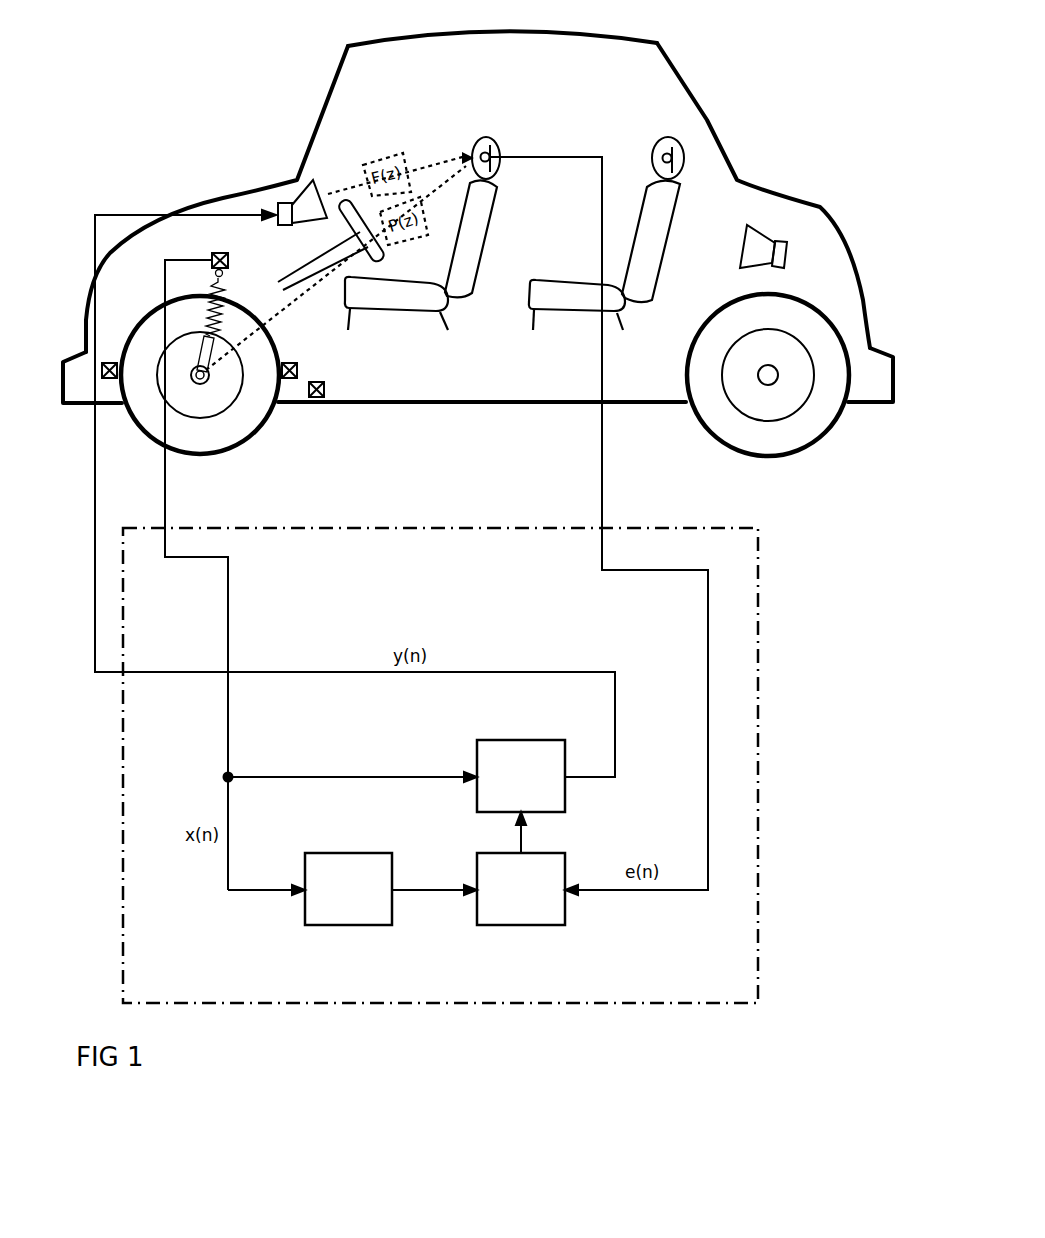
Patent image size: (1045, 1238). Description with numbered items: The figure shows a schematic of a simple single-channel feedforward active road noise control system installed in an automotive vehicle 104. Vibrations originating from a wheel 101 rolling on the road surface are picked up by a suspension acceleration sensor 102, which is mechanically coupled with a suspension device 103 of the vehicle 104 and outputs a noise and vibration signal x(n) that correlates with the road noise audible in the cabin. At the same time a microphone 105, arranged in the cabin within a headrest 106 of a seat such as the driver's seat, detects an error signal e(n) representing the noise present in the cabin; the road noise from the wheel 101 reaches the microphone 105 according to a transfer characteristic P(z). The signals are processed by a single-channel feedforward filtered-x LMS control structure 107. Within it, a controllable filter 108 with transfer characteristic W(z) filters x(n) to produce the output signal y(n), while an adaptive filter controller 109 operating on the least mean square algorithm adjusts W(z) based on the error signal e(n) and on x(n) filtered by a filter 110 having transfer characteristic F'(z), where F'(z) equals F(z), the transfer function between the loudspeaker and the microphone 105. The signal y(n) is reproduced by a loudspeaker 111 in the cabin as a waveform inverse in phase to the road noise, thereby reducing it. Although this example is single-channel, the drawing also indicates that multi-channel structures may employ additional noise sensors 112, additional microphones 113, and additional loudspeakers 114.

The wheel 101 is at (233, 430).
The suspension acceleration sensor 102 is at (218, 253).
The suspension device 103 is at (215, 283).
The automotive vehicle 104 is at (656, 384).
The microphone 105 is at (500, 150).
The headrest 106 is at (481, 138).
The single-channel feedforward filtered-x LMS control structure 107 is at (758, 700).
The controllable filter 108 is at (565, 802).
The adaptive filter controller 109 is at (565, 915).
The filter 110 is at (305, 915).
The loudspeaker 111 is at (317, 181).
The additional noise sensors 112 is at (110, 380).
The additional microphones 113 is at (678, 157).
The additional loudspeakers 114 is at (763, 233).